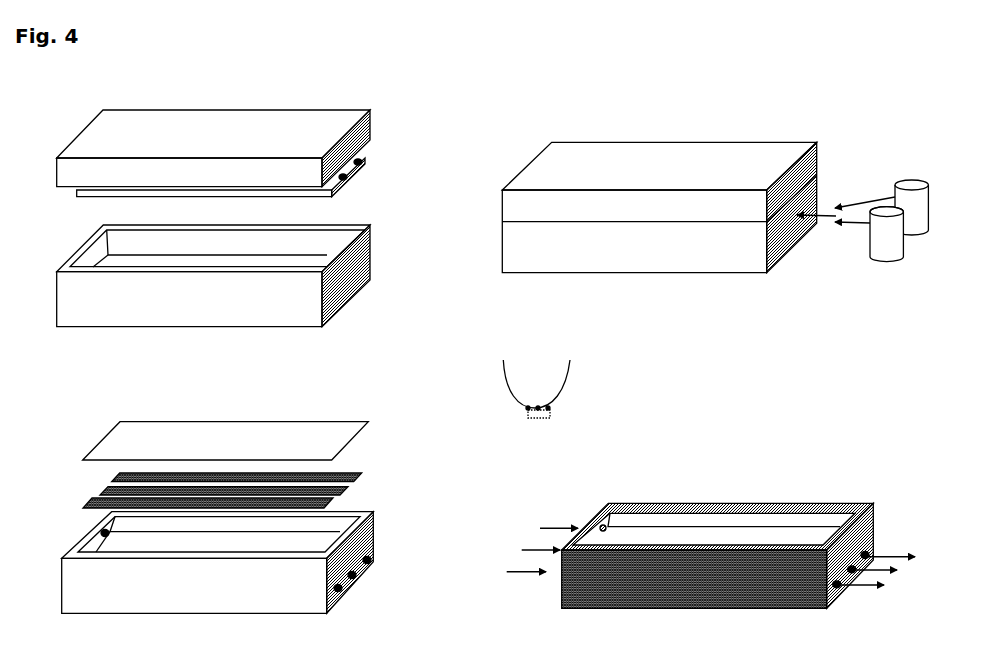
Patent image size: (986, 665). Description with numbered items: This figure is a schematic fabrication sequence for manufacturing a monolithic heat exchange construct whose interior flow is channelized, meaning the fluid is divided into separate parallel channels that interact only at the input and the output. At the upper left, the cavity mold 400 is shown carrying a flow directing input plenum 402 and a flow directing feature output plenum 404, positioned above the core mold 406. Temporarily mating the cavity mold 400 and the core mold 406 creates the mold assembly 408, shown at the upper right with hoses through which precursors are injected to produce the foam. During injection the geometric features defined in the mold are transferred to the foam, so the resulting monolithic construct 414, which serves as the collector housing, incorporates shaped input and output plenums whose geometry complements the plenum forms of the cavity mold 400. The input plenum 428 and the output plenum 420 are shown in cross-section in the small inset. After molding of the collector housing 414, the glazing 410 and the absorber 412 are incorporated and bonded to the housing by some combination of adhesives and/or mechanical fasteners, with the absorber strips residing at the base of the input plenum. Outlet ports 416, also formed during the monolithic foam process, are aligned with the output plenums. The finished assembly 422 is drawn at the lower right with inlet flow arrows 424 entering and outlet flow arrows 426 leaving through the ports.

The cavity mold 400 is at (173, 108).
The flow directing input plenum 402 is at (368, 152).
The flow directing feature output plenum 404 is at (352, 178).
The core mold 406 is at (368, 262).
The mold assembly 408 is at (620, 138).
The glazing 410 is at (370, 432).
The absorber 412 is at (365, 478).
The monolithic construct 414 is at (377, 522).
The outlet ports 416 is at (373, 560).
The output plenum 420 is at (552, 415).
The filled housing with flow 422 is at (812, 498).
The inlet flow arrows 424 is at (552, 523).
The outlet flow arrows 426 is at (887, 550).
The input plenum 428 is at (520, 372).